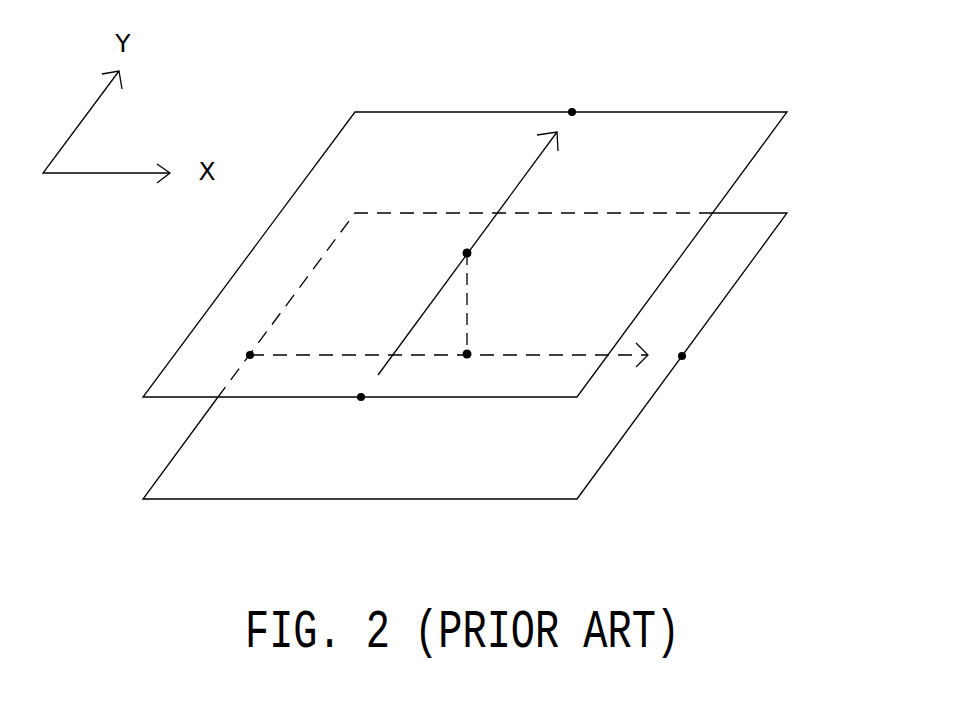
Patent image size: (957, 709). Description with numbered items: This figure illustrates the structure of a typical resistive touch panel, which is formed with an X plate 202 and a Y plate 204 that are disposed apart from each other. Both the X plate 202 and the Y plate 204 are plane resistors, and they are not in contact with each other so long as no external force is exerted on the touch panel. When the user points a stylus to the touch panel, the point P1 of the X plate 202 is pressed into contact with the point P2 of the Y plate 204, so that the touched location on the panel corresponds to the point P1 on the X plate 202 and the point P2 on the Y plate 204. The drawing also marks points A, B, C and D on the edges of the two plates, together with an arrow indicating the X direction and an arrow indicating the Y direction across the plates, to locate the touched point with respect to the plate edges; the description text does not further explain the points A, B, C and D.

The Y plate 204 is at (768, 138).
The X plate 202 is at (763, 250).
The point A on Y plate A is at (577, 95).
The point B on Y plate B is at (361, 381).
The point C on X plate C is at (262, 361).
The point D on X plate D is at (695, 373).
The point P1 is at (460, 238).
The point P2 is at (485, 341).